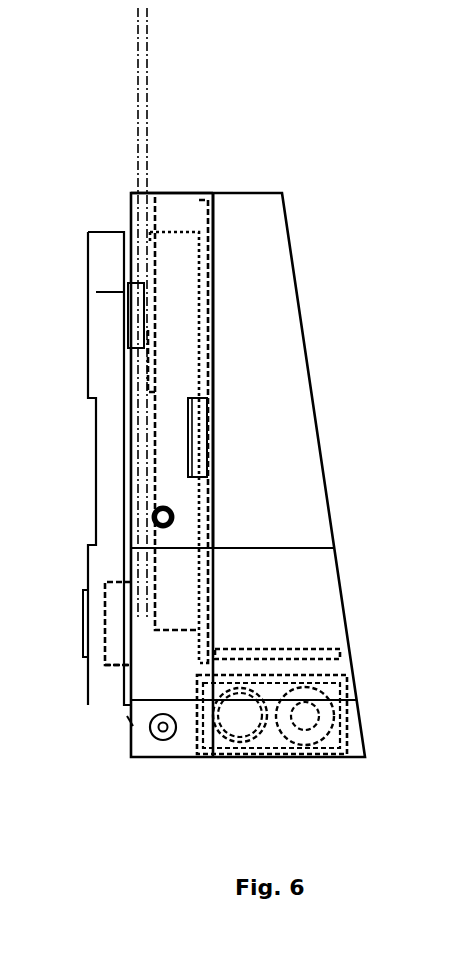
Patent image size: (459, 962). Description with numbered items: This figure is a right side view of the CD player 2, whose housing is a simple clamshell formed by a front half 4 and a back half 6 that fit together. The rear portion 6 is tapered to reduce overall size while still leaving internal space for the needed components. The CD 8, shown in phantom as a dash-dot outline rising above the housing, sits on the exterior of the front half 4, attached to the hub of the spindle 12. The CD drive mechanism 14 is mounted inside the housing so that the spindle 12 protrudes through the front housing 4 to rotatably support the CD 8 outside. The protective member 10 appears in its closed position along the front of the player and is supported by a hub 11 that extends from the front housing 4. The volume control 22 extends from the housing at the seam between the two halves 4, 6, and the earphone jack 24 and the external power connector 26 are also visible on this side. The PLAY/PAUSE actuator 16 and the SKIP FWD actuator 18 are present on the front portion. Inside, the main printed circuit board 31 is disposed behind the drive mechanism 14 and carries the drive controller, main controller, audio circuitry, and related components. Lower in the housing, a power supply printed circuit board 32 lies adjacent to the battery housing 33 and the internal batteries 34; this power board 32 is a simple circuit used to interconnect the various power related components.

The CD player 2 is at (390, 482).
The front half of housing 4 is at (172, 193).
The back half of housing 6 is at (252, 193).
The CD 8 is at (148, 82).
The protective member 10 is at (95, 447).
The hub 11 is at (112, 665).
The spindle 12 is at (124, 283).
The CD drive mechanism 14 is at (175, 232).
The PLAY/PAUSE actuator 16 is at (84, 620).
The SKIP FWD actuator 18 is at (129, 720).
The volume control 22 is at (211, 426).
The earphone jack 24 is at (175, 516).
The external power connector 26 is at (162, 741).
The main printed circuit board 31 is at (214, 309).
The power supply printed circuit board 32 is at (312, 648).
The battery housing 33 is at (350, 736).
The internal batteries 34 is at (298, 728).